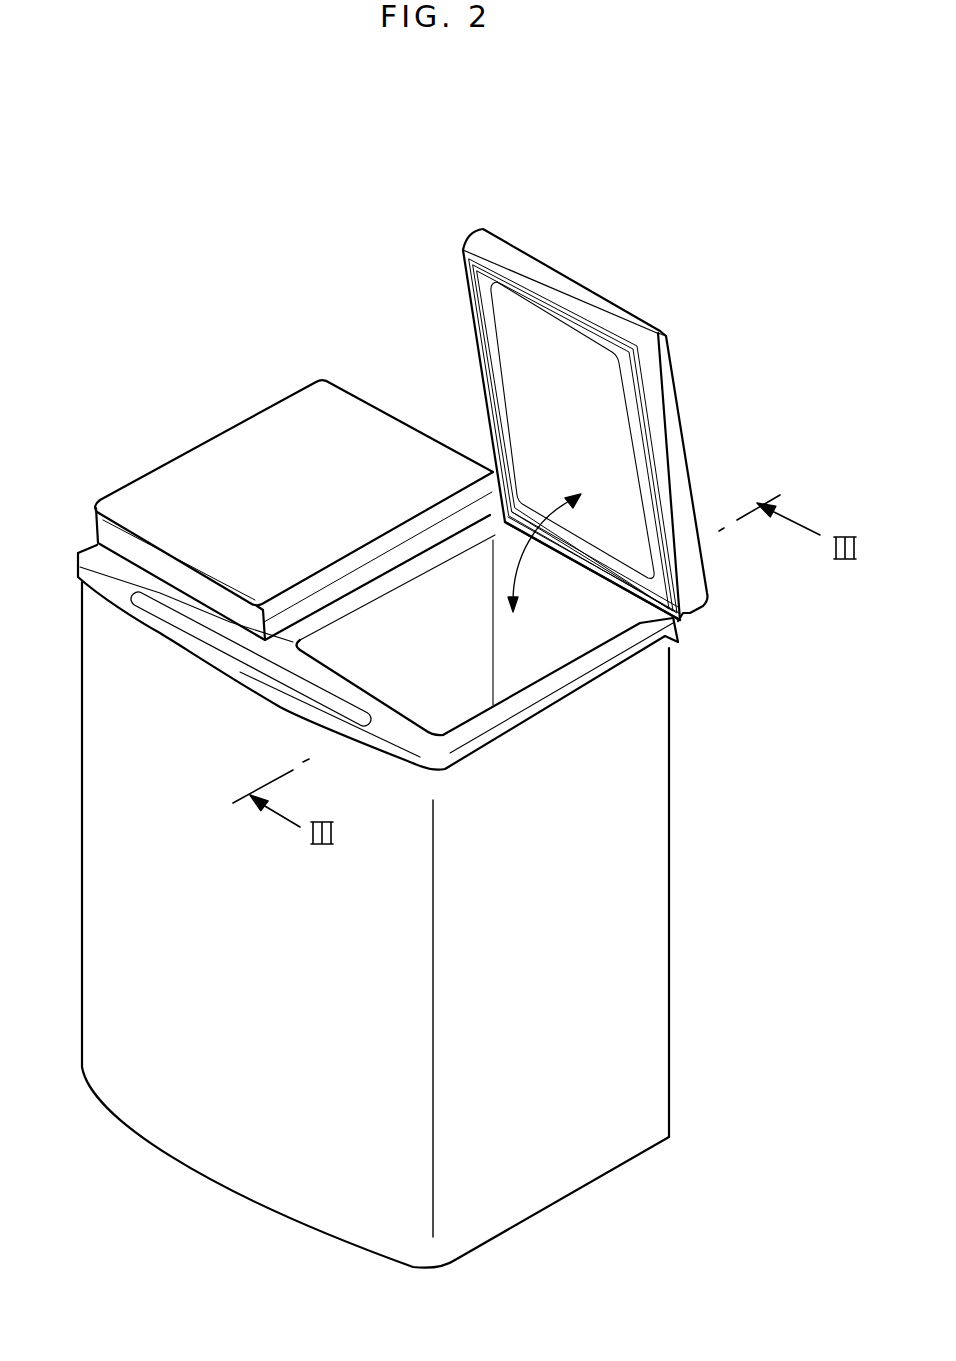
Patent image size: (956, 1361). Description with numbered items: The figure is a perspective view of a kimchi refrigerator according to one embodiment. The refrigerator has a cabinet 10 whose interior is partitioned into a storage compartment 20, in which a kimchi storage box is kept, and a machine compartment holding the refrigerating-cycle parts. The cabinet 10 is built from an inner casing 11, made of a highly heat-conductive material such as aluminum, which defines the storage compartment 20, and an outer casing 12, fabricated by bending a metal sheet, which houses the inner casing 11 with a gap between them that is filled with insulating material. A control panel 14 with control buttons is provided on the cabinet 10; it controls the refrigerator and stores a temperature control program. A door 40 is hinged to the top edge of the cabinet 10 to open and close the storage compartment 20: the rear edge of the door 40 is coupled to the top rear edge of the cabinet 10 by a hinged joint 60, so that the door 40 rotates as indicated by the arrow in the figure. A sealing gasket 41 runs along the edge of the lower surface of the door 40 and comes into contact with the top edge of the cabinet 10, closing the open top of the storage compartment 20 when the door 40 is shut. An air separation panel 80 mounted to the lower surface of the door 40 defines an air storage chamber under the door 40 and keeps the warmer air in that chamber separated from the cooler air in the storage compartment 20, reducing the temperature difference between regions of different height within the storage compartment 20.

The cabinet 10 is at (690, 953).
The inner casing 11 is at (577, 658).
The outer casing 12 is at (660, 800).
The control panel 14 is at (213, 646).
The storage compartment 20 is at (410, 655).
The door 40 is at (257, 447).
The sealing gasket 41 is at (513, 281).
The hinged joint 60 is at (607, 580).
The air separation panel 80 is at (573, 348).